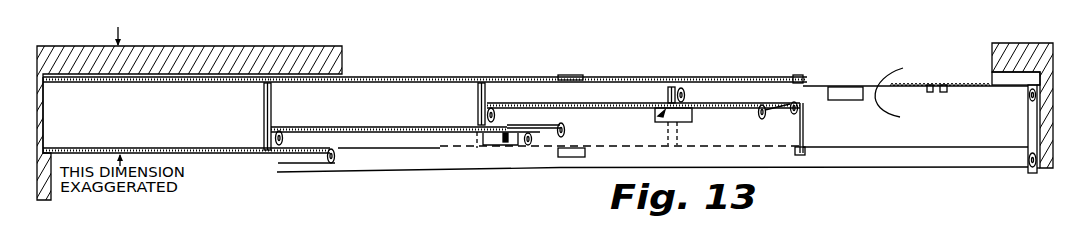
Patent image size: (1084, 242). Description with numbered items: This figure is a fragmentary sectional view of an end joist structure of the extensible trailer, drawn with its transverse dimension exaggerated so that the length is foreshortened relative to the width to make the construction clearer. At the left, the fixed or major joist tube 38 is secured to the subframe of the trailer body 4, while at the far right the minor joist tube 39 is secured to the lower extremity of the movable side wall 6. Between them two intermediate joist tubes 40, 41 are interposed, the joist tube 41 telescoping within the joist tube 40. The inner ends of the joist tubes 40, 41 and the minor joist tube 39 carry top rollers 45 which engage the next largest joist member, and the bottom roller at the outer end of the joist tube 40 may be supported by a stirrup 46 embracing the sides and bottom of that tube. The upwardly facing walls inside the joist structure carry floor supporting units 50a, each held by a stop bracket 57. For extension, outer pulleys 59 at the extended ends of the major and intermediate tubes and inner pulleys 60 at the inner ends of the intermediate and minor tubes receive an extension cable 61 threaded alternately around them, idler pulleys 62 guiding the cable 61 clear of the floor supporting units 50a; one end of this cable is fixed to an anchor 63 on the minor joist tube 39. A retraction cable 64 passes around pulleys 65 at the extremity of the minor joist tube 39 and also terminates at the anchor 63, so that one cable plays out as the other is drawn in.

The frame wall 4 is at (262, 47).
The movable side wall 6 is at (1050, 63).
The major joist tube 38 is at (141, 83).
The minor joist tube 39 is at (883, 84).
The intermediate joist tube 40 is at (421, 80).
The intermediate joist tube 41 is at (713, 66).
The top roller 45 is at (264, 104).
The stirrup 46 is at (571, 75).
The floor supporting unit 50a is at (505, 142).
The stop bracket 57 is at (494, 140).
The outer pulley 59 is at (339, 156).
The inner pulley 60 is at (282, 133).
The extension cable 61 is at (288, 165).
The idler pulley 62 is at (529, 148).
The anchor 63 is at (935, 85).
The retraction cable 64 is at (298, 172).
The pulley 65 is at (1028, 133).